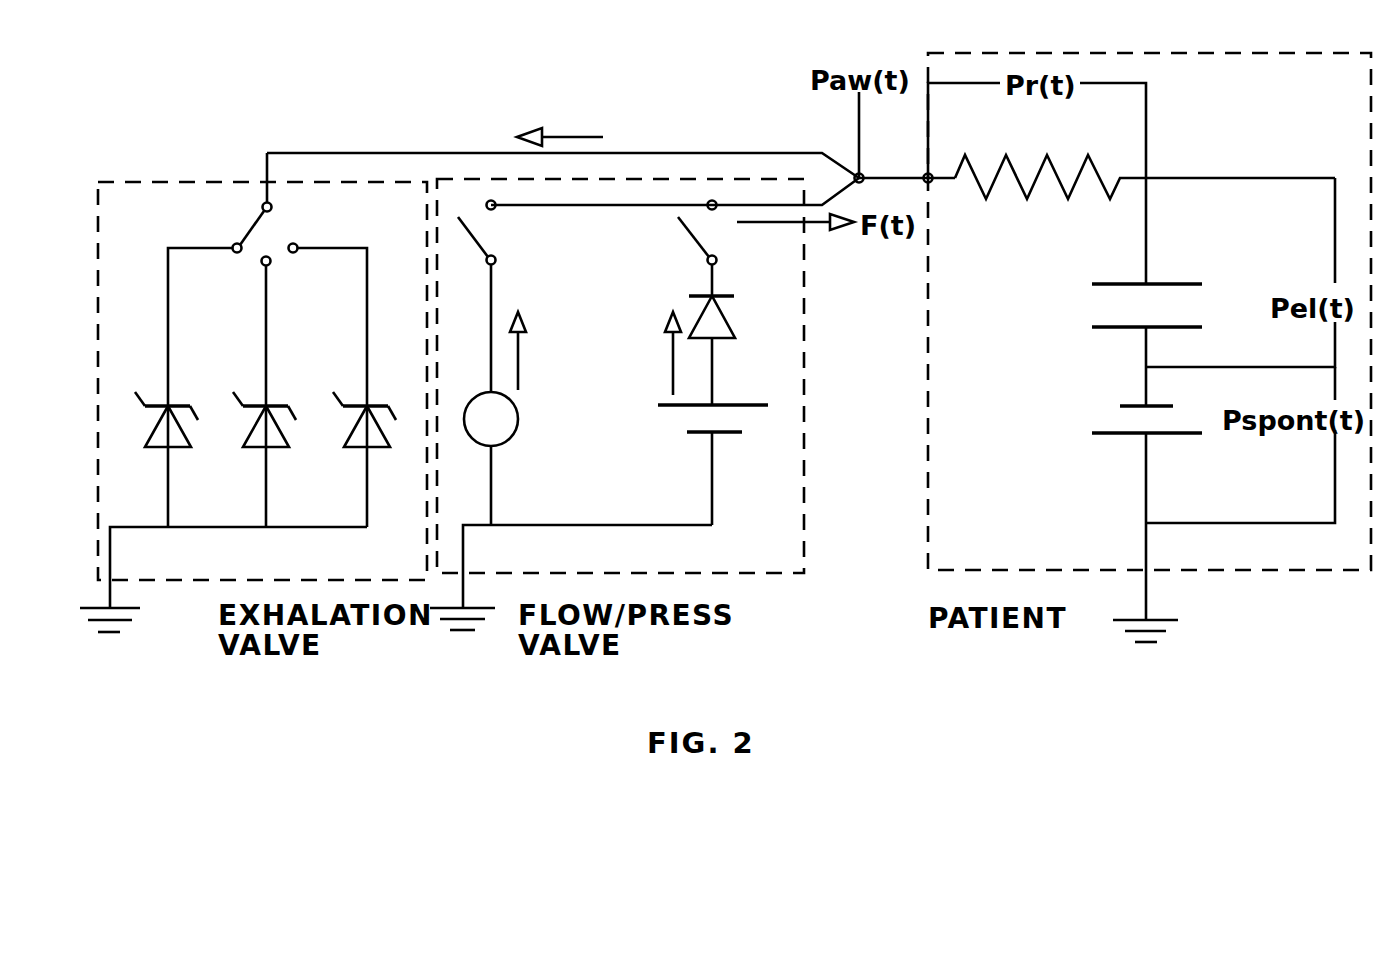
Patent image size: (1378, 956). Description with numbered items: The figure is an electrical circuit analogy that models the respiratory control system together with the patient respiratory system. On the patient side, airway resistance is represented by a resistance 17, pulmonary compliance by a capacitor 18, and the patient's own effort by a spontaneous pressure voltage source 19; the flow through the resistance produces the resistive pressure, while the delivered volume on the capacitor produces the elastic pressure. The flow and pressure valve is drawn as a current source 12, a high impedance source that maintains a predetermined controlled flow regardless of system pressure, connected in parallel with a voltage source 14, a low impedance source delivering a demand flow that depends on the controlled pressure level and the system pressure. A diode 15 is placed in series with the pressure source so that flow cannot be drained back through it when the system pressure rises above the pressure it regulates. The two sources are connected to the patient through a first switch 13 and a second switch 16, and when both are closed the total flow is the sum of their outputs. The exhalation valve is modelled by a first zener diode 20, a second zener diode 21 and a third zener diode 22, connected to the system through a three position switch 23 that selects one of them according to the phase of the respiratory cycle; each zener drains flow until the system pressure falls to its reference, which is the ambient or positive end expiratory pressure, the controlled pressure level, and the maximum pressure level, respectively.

The current source CF 12 is at (516, 402).
The switch S1 13 is at (504, 249).
The voltage source CP 14 is at (715, 458).
The diode 15 is at (692, 350).
The switch S2 16 is at (727, 249).
The resistance R 17 is at (1050, 172).
The capacitor C 18 is at (1131, 292).
The voltage source Pspont(t) 19 is at (1133, 504).
The zener diode Z1 20 is at (146, 393).
The zener diode Z2 21 is at (257, 403).
The zener diode Z3 22 is at (337, 393).
The three position switch S3 23 is at (267, 225).